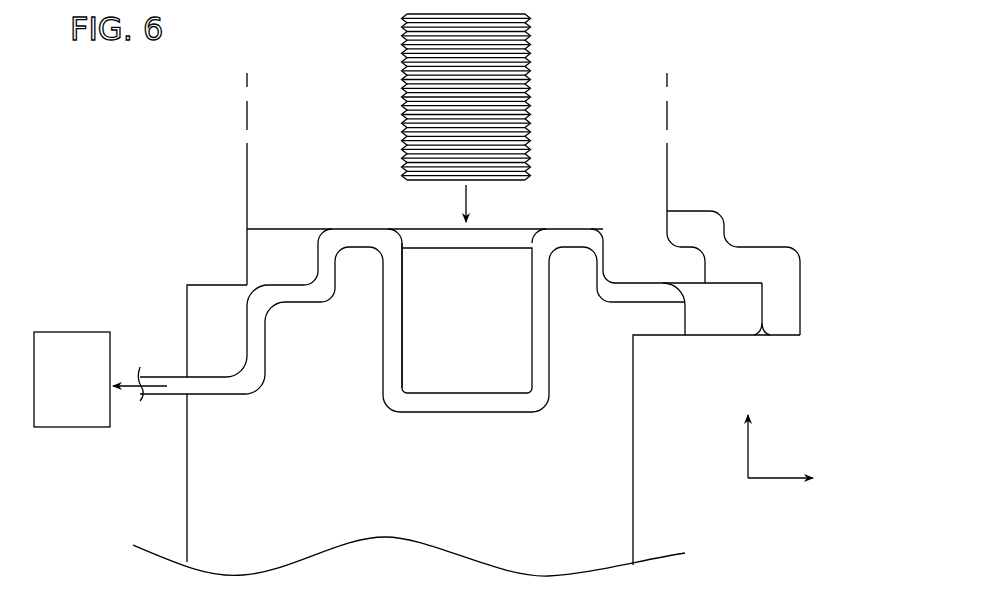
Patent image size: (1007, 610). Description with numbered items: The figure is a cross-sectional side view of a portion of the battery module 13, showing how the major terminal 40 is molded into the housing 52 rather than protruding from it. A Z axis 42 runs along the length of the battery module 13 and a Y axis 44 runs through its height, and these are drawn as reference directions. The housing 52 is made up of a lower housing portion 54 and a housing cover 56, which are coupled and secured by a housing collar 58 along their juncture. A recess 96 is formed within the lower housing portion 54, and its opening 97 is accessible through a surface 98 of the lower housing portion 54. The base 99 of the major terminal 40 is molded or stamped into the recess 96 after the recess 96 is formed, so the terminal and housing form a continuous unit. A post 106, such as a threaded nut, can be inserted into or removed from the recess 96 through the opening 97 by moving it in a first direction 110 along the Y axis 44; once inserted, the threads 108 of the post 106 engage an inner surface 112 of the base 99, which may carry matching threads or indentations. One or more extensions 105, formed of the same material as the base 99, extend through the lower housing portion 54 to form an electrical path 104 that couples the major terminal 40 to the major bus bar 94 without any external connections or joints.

The battery module 13 is at (183, 157).
The major terminal 40 is at (468, 425).
The Z axis 42 is at (777, 480).
The Y axis 44 is at (748, 455).
The housing 52 is at (665, 374).
The lower housing portion 54 is at (607, 536).
The housing cover 56 is at (647, 168).
The housing collar 58 is at (717, 208).
The major bus bar 94 is at (70, 331).
The recess 96 is at (370, 337).
The opening 97 is at (487, 290).
The surface 98 is at (296, 227).
The base 99 is at (499, 393).
The electrical path 104 is at (143, 382).
The extension 105 is at (217, 375).
The post 106 is at (530, 50).
The threads 108 is at (412, 102).
The first direction 110 is at (462, 193).
The inner surface 112 is at (513, 325).